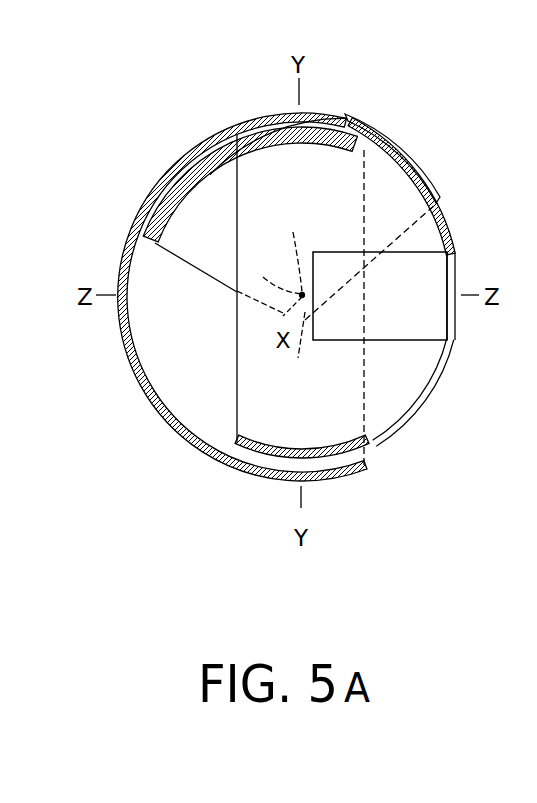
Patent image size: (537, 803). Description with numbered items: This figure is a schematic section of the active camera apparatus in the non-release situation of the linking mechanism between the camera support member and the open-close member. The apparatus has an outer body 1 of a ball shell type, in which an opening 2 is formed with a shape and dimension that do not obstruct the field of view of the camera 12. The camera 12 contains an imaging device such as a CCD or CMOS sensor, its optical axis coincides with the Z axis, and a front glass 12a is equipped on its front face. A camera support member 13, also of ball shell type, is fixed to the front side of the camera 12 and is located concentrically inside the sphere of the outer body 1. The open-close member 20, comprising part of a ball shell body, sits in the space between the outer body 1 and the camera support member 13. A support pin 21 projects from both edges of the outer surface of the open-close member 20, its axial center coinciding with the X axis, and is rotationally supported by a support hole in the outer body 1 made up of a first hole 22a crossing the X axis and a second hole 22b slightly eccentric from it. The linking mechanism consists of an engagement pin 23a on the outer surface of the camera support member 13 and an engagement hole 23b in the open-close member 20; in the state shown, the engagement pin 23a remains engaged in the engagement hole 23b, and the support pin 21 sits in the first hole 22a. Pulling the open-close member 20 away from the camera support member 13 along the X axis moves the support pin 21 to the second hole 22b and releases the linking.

The outer body 1 is at (170, 168).
The opening 2 is at (366, 458).
The camera 12 is at (428, 325).
The front glass 12a is at (450, 326).
The camera support member 13 is at (406, 420).
The open-close member 20 is at (397, 160).
The support pin 21 is at (297, 350).
The first hole 22a is at (269, 280).
The second hole 22b is at (285, 249).
The engagement pin 23a is at (247, 124).
The engagement hole 23b is at (234, 140).